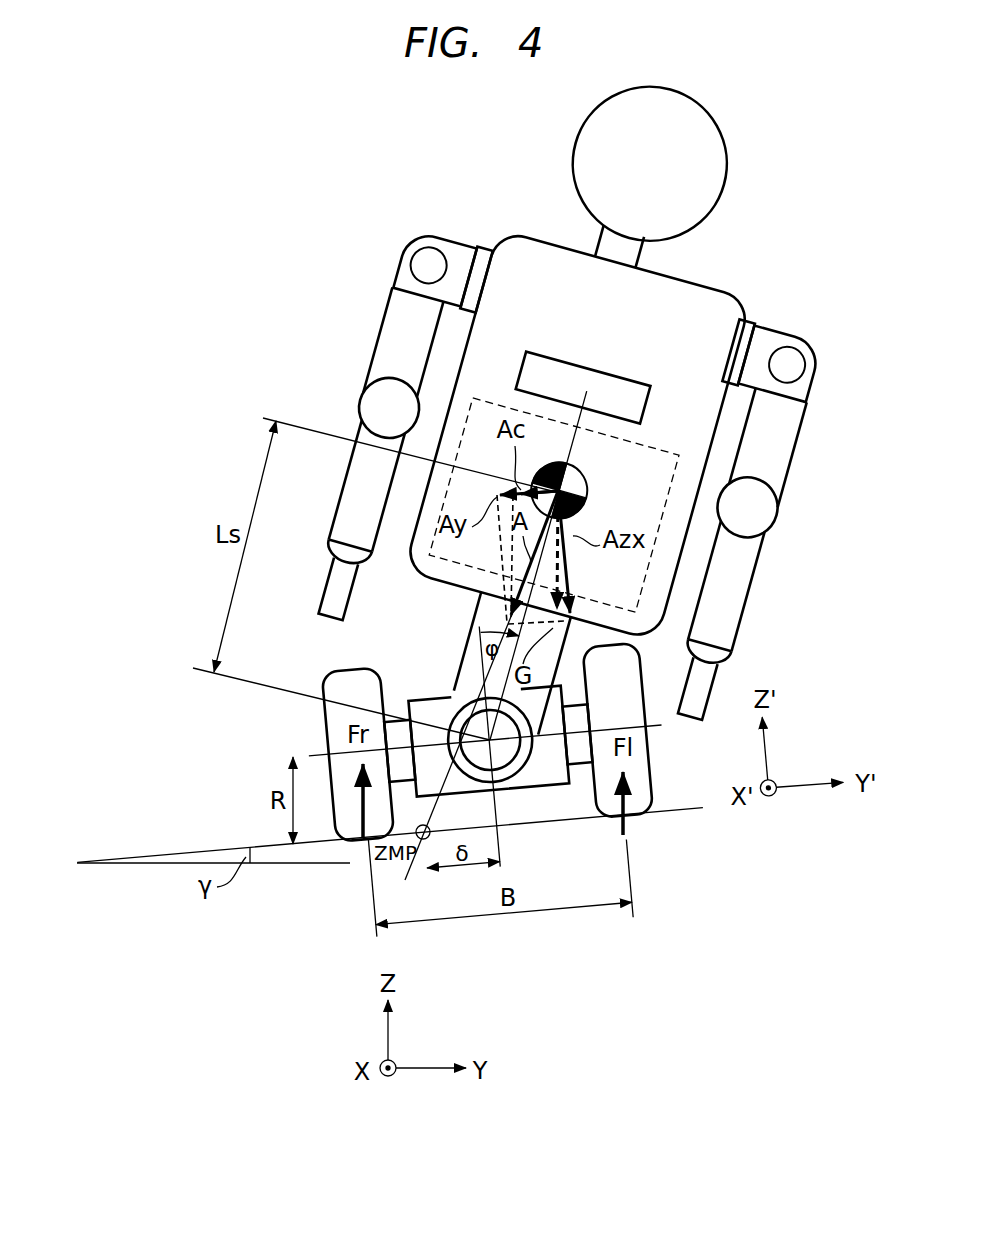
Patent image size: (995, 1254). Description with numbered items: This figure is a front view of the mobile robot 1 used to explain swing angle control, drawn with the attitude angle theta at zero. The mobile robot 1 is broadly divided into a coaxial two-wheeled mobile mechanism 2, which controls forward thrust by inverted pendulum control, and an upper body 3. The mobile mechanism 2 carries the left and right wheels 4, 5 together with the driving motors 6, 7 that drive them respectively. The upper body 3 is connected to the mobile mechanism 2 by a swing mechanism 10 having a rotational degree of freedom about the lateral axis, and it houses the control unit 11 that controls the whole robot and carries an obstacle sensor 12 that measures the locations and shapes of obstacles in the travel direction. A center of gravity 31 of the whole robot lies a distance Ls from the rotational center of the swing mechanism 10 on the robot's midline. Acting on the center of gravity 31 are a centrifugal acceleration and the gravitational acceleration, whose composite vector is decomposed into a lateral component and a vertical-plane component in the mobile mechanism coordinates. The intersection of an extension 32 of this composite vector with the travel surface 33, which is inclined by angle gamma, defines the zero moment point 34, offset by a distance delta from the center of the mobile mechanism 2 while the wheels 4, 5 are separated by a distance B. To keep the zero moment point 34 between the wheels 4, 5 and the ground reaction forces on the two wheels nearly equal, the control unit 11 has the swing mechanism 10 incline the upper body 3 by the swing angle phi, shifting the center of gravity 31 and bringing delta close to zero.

The mobile robot 1 is at (536, 406).
The mobile mechanism 2 is at (517, 784).
The upper body 3 is at (712, 300).
The wheel 4 is at (322, 725).
The wheel 5 is at (652, 752).
The driving motor 6 is at (402, 730).
The driving motor 7 is at (579, 768).
The swing mechanism 10 is at (458, 690).
The control unit 11 is at (633, 587).
The obstacle sensor 12 is at (637, 405).
The center of gravity 31 is at (548, 466).
The extension 32 is at (433, 808).
The travel surface 33 is at (258, 846).
The ZMP 34 is at (421, 850).